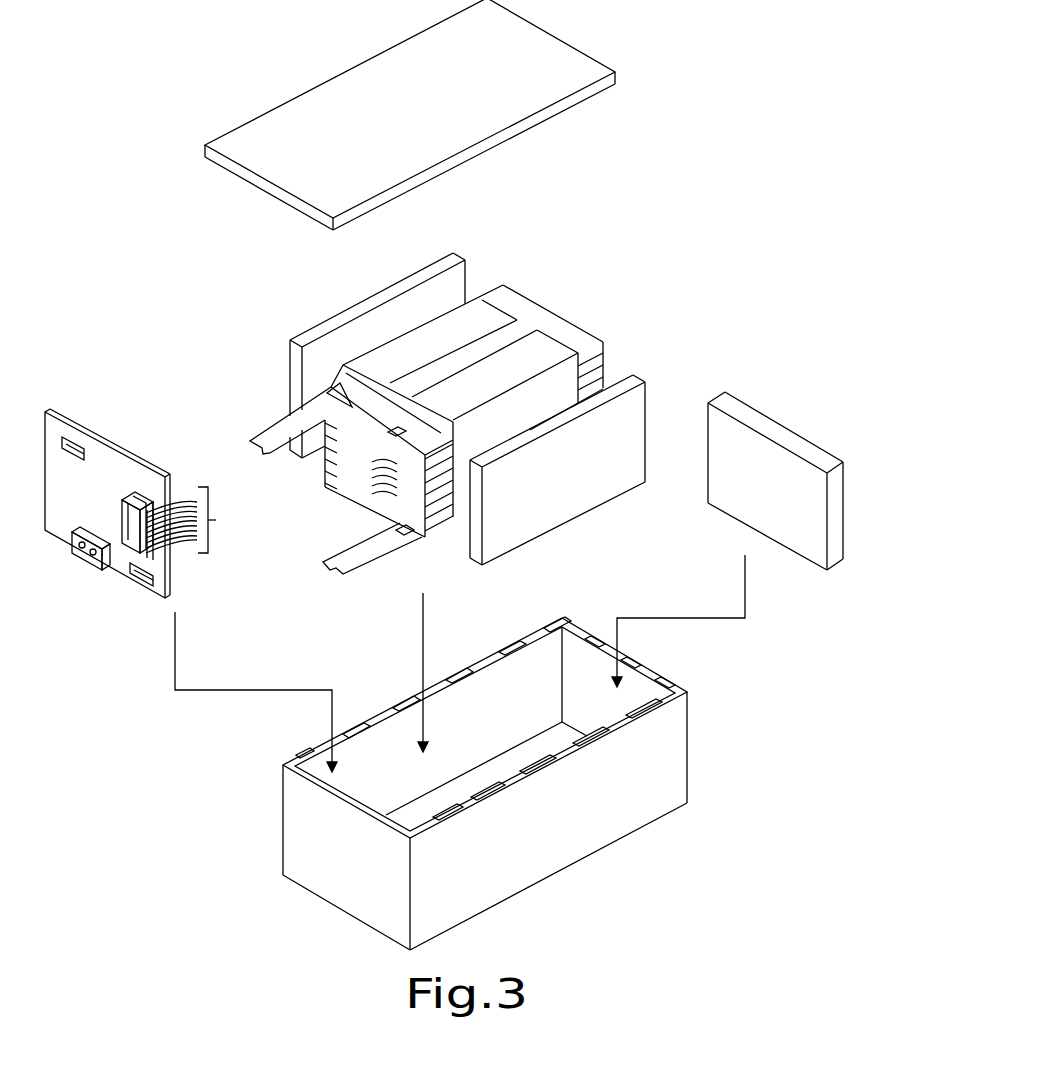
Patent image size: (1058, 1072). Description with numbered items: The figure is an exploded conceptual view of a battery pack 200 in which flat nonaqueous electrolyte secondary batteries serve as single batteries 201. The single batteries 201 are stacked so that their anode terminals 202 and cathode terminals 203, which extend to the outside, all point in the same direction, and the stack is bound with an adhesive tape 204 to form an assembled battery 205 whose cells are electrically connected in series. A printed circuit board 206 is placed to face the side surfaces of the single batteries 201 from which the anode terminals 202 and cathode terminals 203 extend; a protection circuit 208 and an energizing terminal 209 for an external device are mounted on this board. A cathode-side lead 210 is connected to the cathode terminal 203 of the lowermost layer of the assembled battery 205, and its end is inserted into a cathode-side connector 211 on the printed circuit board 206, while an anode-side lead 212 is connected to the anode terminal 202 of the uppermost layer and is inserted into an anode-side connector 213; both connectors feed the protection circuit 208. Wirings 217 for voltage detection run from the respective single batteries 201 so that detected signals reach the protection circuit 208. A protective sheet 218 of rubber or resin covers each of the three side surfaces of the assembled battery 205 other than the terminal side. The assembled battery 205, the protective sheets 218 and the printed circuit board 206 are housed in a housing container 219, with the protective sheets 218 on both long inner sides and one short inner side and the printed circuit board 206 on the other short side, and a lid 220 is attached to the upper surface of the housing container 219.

The battery pack 200 is at (125, 115).
The single battery 201 is at (603, 350).
The anode terminal 202 is at (327, 393).
The cathode terminal 203 is at (393, 437).
The adhesive tape 204 is at (527, 357).
The assembled battery 205 is at (416, 330).
The printed circuit board 206 is at (77, 405).
The protection circuit 208 is at (137, 497).
The energizing terminal for an external device 209 is at (96, 560).
The cathode-side lead 210 is at (362, 562).
The cathode-side connector 211 is at (157, 578).
The anode-side lead 212 is at (258, 432).
The anode-side connector 213 is at (85, 446).
The wirings for voltage detection 217 is at (358, 470).
The protective sheet 218 is at (350, 318).
The housing container 219 is at (675, 755).
The lid 220 is at (573, 60).